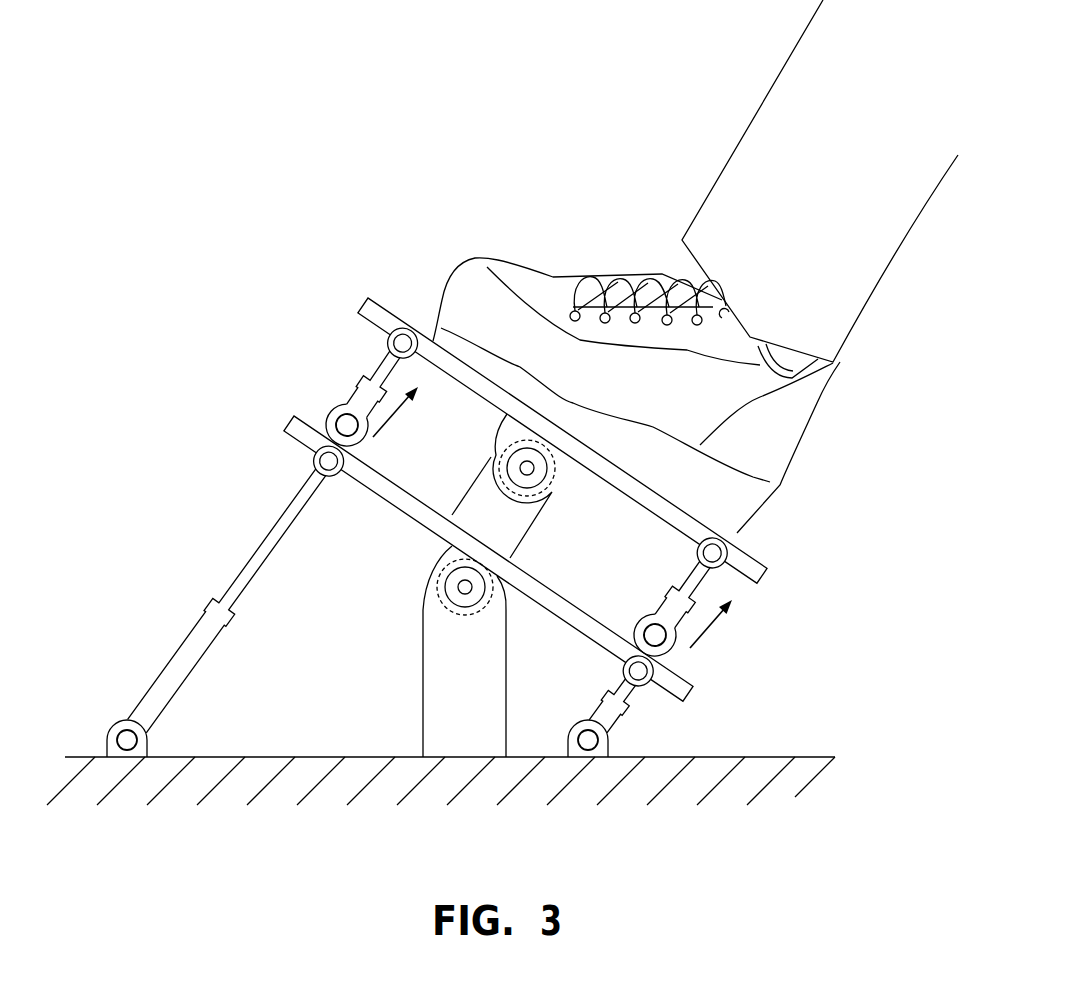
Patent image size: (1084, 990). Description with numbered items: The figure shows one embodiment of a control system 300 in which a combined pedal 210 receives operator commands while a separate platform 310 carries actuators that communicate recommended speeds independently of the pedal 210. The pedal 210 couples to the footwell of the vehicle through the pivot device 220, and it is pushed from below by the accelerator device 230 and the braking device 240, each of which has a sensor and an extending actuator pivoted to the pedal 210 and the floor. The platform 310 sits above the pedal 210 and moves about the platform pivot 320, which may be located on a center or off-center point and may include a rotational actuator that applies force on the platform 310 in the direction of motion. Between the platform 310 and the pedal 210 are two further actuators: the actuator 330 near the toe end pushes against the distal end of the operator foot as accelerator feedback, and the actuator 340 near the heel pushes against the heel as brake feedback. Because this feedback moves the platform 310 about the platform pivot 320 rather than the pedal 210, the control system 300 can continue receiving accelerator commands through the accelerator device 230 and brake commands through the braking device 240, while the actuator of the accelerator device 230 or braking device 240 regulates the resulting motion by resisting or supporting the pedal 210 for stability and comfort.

The control system 300 is at (274, 114).
The pedal 210 is at (290, 423).
The platform 310 is at (368, 303).
The pivot device 220 is at (455, 592).
The platform pivot 320 is at (515, 470).
The accelerator device 230 is at (178, 663).
The braking device 240 is at (600, 716).
The actuator 330 is at (355, 400).
The actuator 340 is at (668, 608).